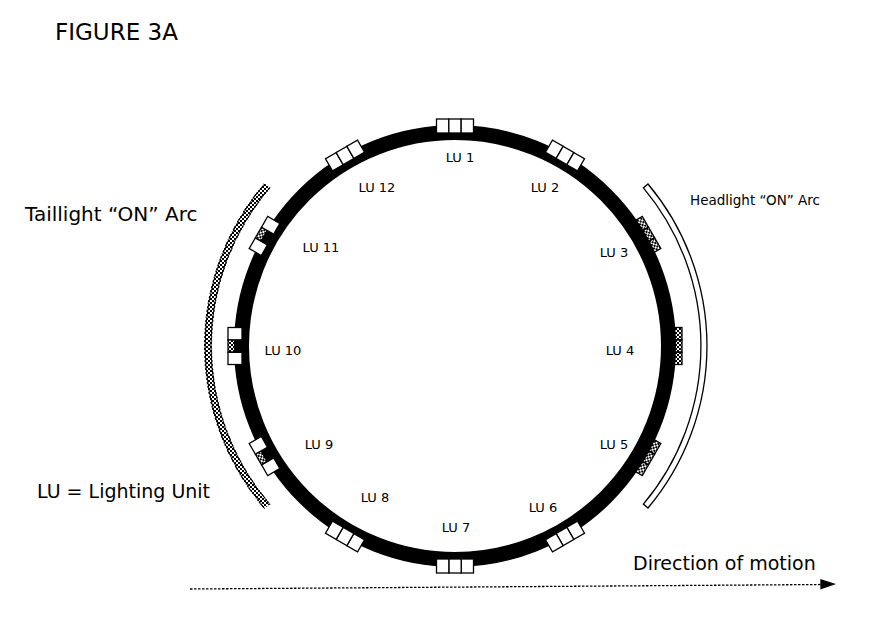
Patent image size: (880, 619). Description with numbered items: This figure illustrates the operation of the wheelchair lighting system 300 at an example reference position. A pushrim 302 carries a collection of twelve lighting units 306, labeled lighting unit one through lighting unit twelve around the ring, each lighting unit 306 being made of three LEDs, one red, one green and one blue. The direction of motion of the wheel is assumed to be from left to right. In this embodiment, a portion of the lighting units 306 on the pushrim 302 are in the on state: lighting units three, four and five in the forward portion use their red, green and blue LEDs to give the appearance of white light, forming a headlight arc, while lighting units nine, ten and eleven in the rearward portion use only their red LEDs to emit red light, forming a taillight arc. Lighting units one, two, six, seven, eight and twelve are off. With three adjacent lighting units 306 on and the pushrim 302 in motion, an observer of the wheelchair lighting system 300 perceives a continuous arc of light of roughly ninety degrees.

The wheelchair lighting system 300 is at (464, 346).
The pushrim 302 is at (608, 183).
The lighting unit 306 is at (682, 337).